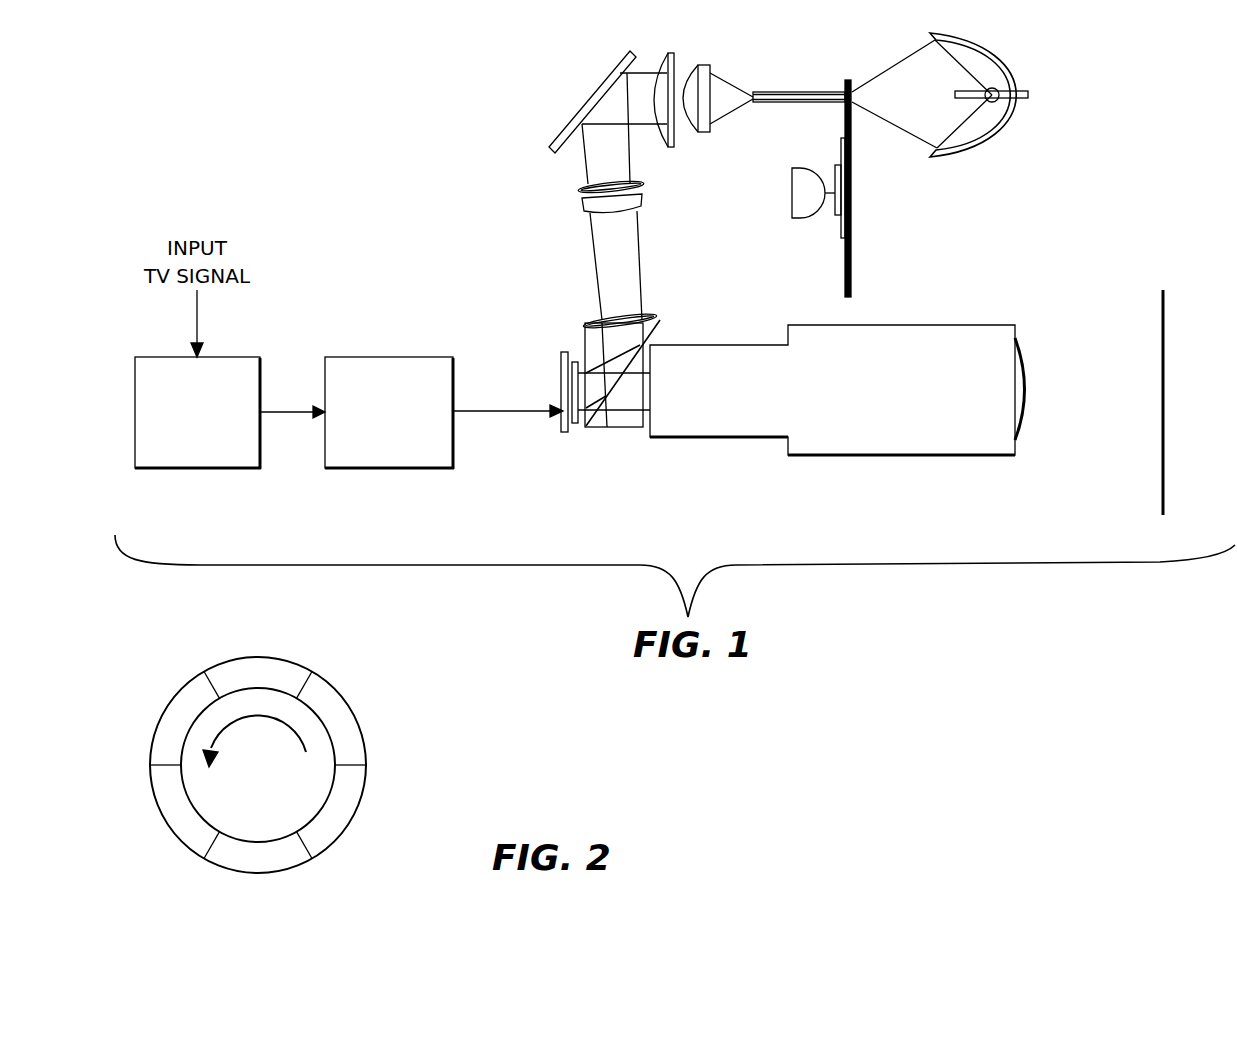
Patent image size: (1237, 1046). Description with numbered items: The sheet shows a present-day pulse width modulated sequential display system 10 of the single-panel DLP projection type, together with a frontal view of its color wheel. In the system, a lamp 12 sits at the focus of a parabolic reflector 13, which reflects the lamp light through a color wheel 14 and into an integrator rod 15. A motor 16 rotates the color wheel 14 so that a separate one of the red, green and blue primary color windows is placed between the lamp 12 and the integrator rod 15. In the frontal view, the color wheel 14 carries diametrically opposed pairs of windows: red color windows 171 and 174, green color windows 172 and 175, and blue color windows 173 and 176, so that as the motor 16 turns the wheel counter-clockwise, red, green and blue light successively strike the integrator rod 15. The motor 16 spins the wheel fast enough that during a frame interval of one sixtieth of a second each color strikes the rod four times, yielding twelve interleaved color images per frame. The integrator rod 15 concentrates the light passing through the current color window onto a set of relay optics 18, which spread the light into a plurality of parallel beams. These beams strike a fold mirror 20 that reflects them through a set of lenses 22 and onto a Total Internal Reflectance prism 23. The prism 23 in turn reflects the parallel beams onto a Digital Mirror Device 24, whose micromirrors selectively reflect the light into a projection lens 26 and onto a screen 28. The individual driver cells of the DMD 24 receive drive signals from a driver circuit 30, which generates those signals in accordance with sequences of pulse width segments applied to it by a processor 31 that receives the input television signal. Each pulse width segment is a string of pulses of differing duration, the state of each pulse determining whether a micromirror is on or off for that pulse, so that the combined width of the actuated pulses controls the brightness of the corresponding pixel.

In FIG. 1, the pulse width modulated sequential display system 10 is at (671, 548).
In FIG. 1, the lamp 12 is at (993, 103).
In FIG. 1, the parabolic reflector 13 is at (973, 150).
In FIG. 1, the color wheel 14 is at (846, 276).
In FIG. 2, the color wheel 14 is at (527, 808).
In FIG. 1, the integrator rod 15 is at (797, 92).
In FIG. 1, the motor 16 is at (792, 197).
In FIG. 1, the relay optics 18 is at (728, 145).
In FIG. 1, the fold mirror 20 is at (563, 128).
In FIG. 1, the set of lenses 22 is at (576, 176).
In FIG. 1, the Total Internal Reflectance (TIR) prism 23 is at (620, 428).
In FIG. 1, the Digital Mirror Device (DMD) 24 is at (562, 362).
In FIG. 1, the projection lens 26 is at (806, 457).
In FIG. 1, the screen 28 is at (1163, 482).
In FIG. 1, the driver circuit 30 is at (370, 469).
In FIG. 1, the processor 31 is at (190, 469).
In FIG. 2, the red color window 171 is at (288, 656).
In FIG. 2, the green color window 172 is at (350, 700).
In FIG. 2, the blue color window 173 is at (362, 791).
In FIG. 2, the red color window 174 is at (287, 873).
In FIG. 2, the green color window 175 is at (170, 830).
In FIG. 2, the blue color window 176 is at (163, 716).